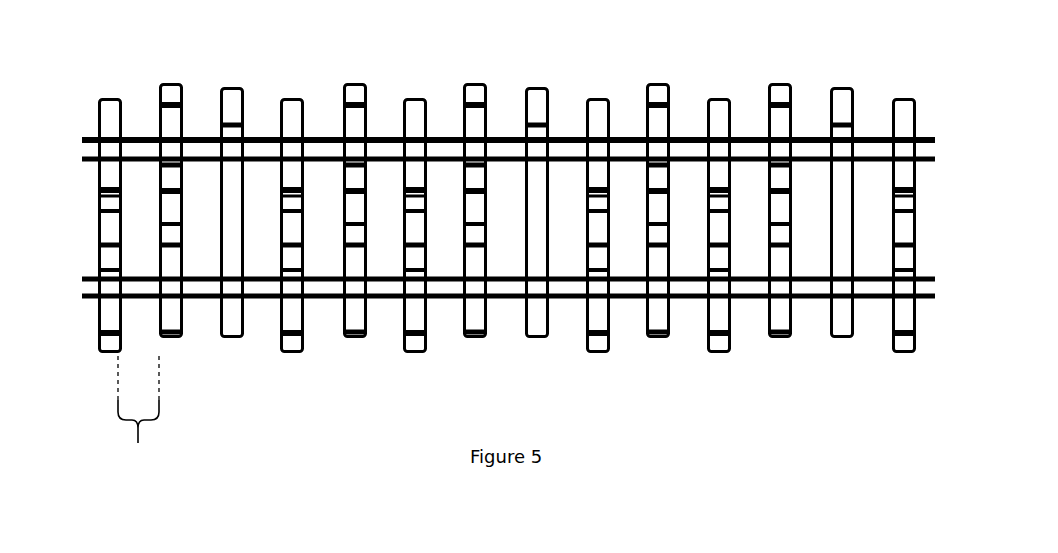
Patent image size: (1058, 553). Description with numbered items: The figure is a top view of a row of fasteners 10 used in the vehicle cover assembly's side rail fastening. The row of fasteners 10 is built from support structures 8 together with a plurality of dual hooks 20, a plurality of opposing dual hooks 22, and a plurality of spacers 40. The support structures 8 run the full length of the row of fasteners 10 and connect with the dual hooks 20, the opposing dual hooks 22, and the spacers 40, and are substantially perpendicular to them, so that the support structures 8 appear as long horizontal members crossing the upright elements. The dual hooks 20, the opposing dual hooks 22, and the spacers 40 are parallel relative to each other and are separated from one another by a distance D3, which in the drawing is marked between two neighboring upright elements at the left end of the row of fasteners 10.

The support structures 8 is at (742, 285).
The row of fasteners 10 is at (752, 50).
The dual hooks 20 is at (291, 381).
The opposing dual hooks 22 is at (371, 347).
The spacers 40 is at (558, 344).
The distance D3 is at (138, 443).